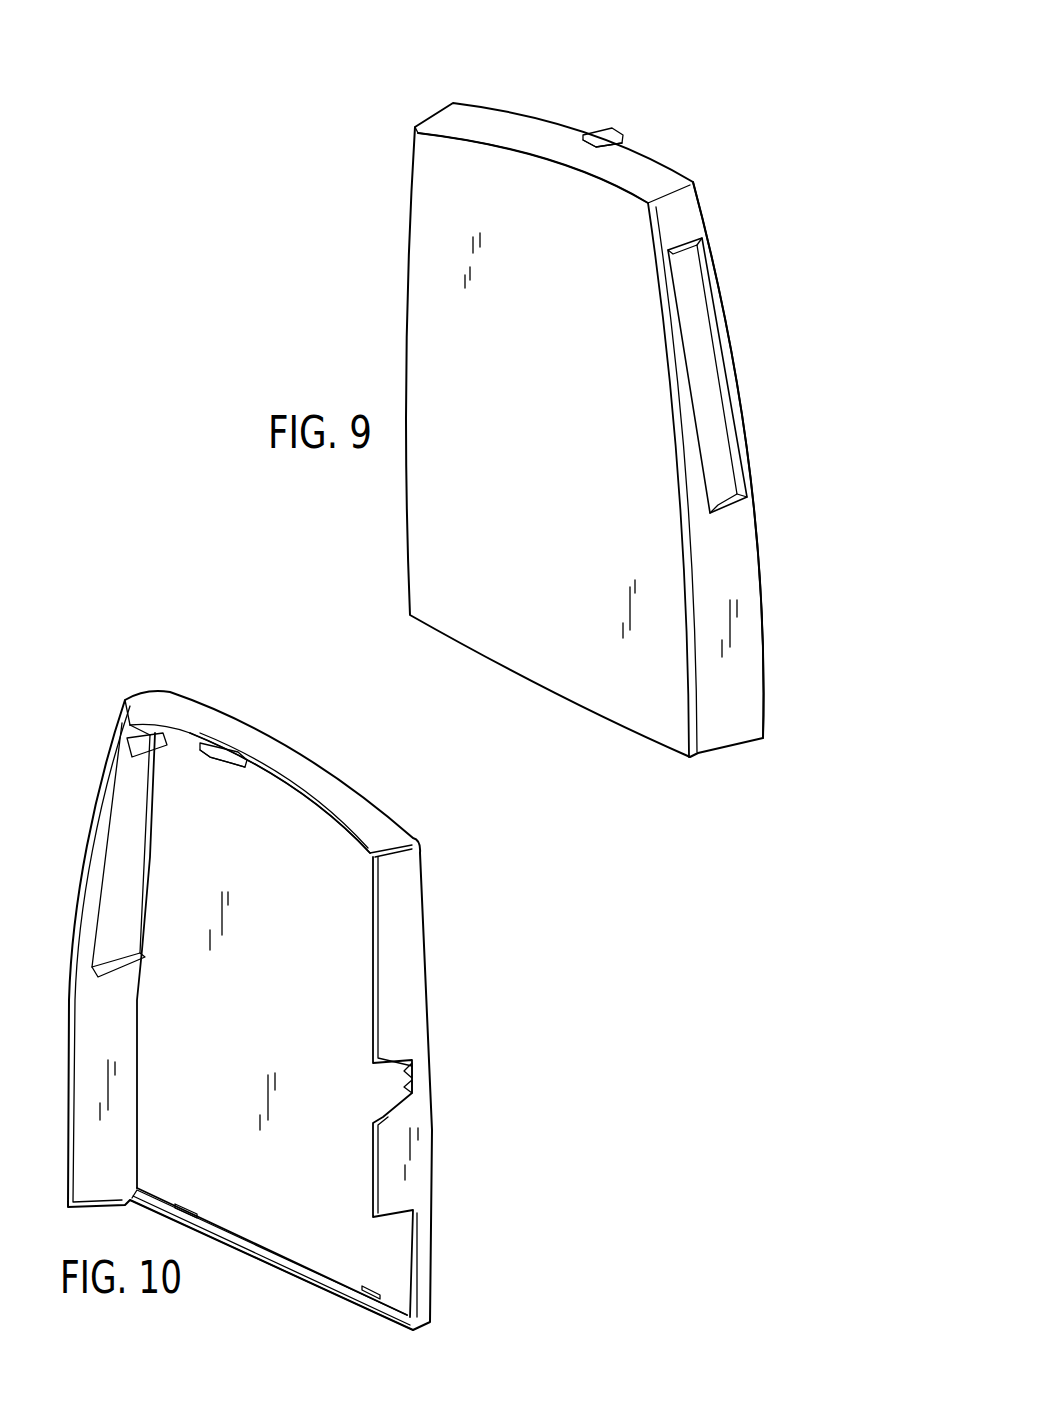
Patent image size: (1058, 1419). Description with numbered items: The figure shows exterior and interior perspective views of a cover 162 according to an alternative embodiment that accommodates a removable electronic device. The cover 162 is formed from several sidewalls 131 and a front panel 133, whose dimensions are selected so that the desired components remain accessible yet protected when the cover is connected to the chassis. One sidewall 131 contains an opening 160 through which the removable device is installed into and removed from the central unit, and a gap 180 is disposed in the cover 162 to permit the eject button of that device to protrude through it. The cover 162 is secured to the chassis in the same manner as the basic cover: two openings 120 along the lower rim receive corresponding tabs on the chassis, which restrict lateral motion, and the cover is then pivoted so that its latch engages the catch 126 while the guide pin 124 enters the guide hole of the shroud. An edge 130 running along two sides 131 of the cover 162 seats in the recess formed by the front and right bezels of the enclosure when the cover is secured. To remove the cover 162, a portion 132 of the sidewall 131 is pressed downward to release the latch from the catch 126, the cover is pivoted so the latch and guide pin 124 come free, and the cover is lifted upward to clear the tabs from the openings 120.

In FIG. 10, the openings 120 is at (183, 1204).
In FIG. 10, the guide pin 124 is at (123, 723).
In FIG. 9, the catch 126 is at (601, 133).
In FIG. 10, the catch 126 is at (218, 748).
In FIG. 10, the edge 130 is at (290, 783).
In FIG. 9, the sidewall 131 is at (728, 705).
In FIG. 10, the sidewall 131 is at (112, 1017).
In FIG. 9, the portion of sidewall 132 is at (505, 125).
In FIG. 10, the portion of sidewall 132 is at (277, 750).
In FIG. 9, the front panel 133 is at (652, 693).
In FIG. 10, the front panel 133 is at (309, 1037).
In FIG. 9, the opening 160 is at (693, 330).
In FIG. 10, the opening 160 is at (112, 863).
In FIG. 9, the cover 162 is at (688, 129).
In FIG. 10, the cover 162 is at (248, 690).
In FIG. 10, the gap 180 is at (397, 1075).